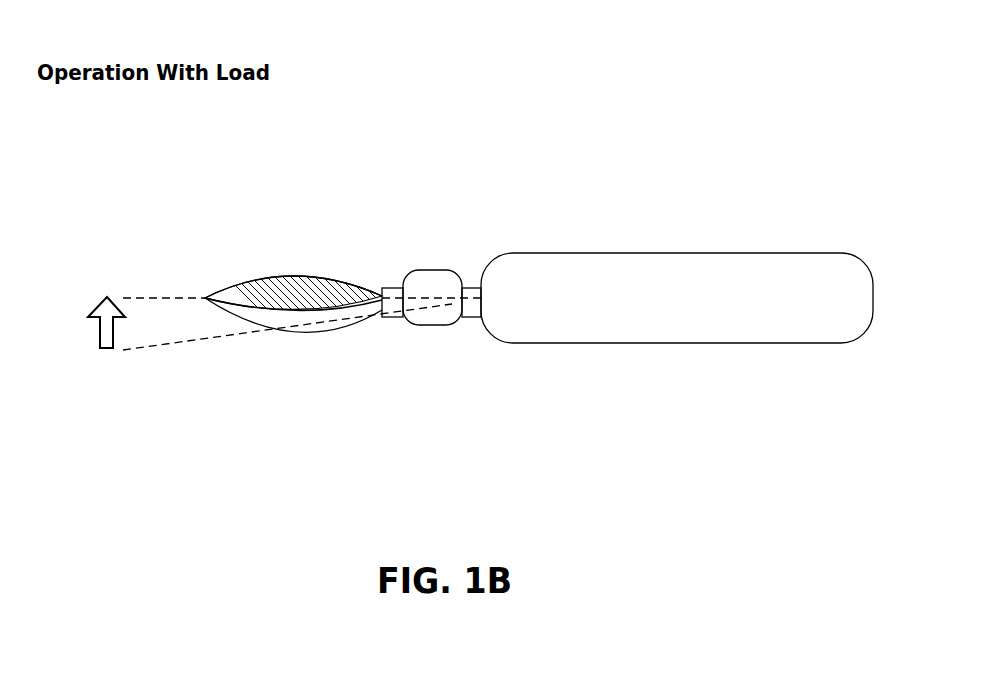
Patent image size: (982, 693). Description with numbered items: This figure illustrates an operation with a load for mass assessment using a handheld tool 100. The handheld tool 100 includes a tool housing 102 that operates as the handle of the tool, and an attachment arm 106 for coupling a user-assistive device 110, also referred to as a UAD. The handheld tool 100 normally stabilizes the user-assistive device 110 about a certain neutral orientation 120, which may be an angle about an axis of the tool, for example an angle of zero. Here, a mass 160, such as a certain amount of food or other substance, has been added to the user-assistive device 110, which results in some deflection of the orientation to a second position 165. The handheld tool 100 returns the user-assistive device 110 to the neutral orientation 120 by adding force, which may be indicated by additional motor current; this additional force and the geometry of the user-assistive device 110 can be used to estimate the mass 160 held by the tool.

The handheld tool 100 is at (748, 178).
The tool housing 102 is at (677, 298).
The attachment arm 106 is at (438, 270).
The user assistive device 110 is at (310, 336).
The neutral orientation 120 is at (143, 297).
The mass 160 is at (307, 277).
The second position 165 is at (148, 347).